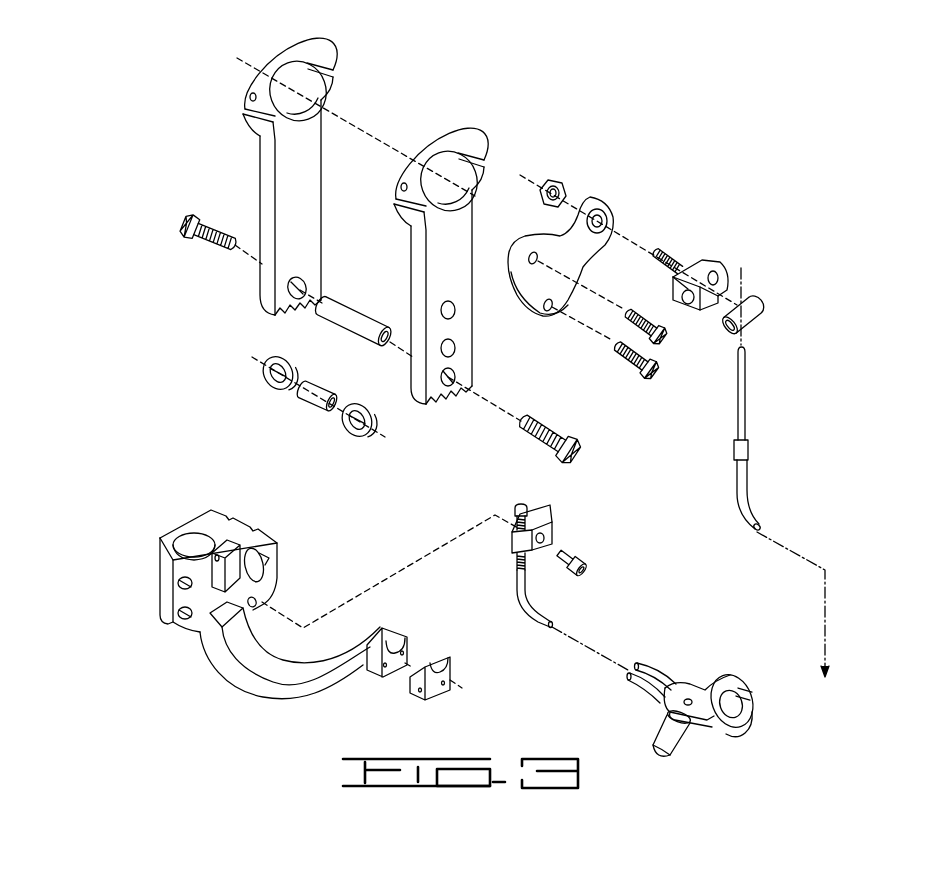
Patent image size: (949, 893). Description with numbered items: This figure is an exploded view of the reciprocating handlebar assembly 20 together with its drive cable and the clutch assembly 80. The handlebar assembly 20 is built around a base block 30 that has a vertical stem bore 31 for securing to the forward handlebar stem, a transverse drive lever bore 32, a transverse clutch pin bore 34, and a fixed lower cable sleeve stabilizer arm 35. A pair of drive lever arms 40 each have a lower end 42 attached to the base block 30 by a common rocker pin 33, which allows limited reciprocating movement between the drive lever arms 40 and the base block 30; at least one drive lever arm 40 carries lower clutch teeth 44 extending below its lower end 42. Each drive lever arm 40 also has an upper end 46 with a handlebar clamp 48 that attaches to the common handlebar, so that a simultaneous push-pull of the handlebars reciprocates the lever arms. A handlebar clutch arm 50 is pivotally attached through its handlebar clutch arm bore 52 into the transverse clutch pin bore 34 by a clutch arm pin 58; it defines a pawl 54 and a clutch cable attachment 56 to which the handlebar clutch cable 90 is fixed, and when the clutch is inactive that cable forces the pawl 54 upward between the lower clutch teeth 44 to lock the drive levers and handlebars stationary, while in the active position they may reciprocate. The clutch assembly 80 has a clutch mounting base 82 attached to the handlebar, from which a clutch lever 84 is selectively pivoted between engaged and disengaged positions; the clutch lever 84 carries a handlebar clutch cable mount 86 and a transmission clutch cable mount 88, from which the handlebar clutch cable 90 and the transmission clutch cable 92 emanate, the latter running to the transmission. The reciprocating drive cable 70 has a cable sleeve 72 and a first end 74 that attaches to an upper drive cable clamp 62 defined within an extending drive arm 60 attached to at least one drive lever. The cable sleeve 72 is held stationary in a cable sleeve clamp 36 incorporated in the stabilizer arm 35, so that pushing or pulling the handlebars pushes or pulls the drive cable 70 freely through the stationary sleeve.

The handlebar assembly 20 is at (810, 124).
The base block 30 is at (160, 592).
The vertical stem bore 31 is at (193, 545).
The transverse drive lever bore 32 is at (265, 563).
The common rocker pin 33 is at (363, 298).
The transverse clutch pin bore 34 is at (265, 597).
The lower cable sleeve stabilizer arm 35 is at (277, 697).
The cable sleeve clamp 36 is at (446, 690).
The drive lever arm 40 is at (262, 165).
The lower end 42 is at (264, 300).
The lower clutch teeth 44 is at (451, 404).
The upper end 46 is at (490, 178).
The handlebar clamp 48 is at (443, 124).
The handlebar clutch arm 50 is at (531, 553).
The handlebar clutch arm bore 52 is at (542, 533).
The pawl 54 is at (540, 510).
The clutch cable attachment 56 is at (515, 565).
The clutch arm pin 58 is at (589, 562).
The extending drive arm 60 is at (596, 197).
The upper drive cable clamp 62 is at (712, 262).
The reciprocating drive cable 70 is at (748, 470).
The cable sleeve 72 is at (737, 497).
The first end 74 is at (746, 390).
The clutch assembly 80 is at (731, 674).
The clutch mounting base 82 is at (742, 723).
The clutch lever 84 is at (680, 750).
The handlebar clutch cable mount 86 is at (666, 710).
The transmission clutch cable mount 88 is at (688, 683).
The handlebar clutch cable 90 is at (522, 608).
The transmission clutch cable 92 is at (652, 663).